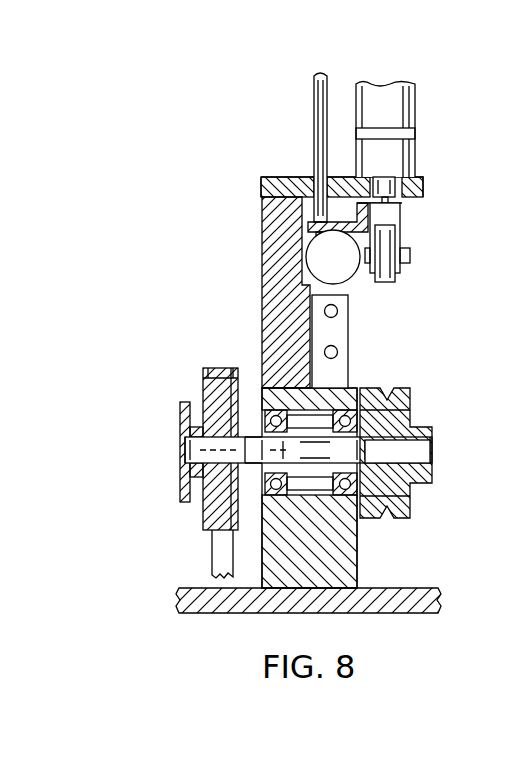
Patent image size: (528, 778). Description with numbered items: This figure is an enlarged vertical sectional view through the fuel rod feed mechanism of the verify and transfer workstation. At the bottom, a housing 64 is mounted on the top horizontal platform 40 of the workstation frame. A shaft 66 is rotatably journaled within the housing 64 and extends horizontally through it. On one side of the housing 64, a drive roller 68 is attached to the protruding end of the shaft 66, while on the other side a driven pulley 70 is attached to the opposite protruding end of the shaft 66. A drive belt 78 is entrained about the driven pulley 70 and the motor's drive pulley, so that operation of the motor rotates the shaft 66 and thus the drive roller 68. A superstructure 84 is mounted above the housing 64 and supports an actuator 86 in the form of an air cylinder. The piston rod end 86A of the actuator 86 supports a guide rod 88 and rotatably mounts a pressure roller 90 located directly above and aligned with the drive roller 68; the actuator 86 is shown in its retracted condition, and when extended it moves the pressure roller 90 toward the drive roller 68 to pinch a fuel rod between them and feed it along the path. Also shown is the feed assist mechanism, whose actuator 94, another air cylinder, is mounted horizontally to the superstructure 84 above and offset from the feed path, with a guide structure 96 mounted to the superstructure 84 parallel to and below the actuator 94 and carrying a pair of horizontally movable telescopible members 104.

The top horizontal platform 40 is at (200, 588).
The housing 64 is at (333, 555).
The shaft 66 is at (300, 462).
The drive roller 68 is at (411, 393).
The driven pulley 70 is at (203, 510).
The drive belt 78 is at (218, 366).
The superstructure 84 is at (261, 206).
The actuator 86 is at (416, 118).
The piston rod end 86A is at (392, 200).
The guide rod 88 is at (313, 110).
The pressure roller 90 is at (396, 277).
The actuator 94 is at (318, 252).
The guide structure 96 is at (320, 328).
The telescopible members 104 is at (340, 352).